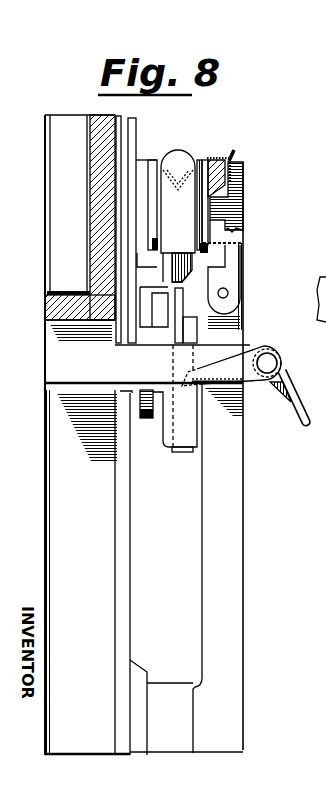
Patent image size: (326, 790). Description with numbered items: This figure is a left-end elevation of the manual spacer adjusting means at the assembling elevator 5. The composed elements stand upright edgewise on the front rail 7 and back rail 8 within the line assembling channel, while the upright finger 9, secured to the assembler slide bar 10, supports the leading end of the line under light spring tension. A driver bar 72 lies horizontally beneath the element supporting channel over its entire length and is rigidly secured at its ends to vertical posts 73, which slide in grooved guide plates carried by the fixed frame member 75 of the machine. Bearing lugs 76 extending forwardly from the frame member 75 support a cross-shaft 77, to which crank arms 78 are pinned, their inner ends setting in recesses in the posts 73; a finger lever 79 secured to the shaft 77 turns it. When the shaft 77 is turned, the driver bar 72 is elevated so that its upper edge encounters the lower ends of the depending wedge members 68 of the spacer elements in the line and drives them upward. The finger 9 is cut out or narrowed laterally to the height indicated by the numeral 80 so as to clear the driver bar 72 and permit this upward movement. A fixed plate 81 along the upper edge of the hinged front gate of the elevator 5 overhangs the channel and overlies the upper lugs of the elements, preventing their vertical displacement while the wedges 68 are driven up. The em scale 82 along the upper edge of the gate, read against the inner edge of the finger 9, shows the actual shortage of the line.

The assembling elevator 5 is at (243, 453).
The front rail 7 is at (209, 254).
The back rail 8 is at (151, 262).
The upright finger 9 is at (182, 152).
The assembler slide bar 10 is at (137, 338).
The depending wedge member 68 is at (186, 270).
The driver bar 72 is at (179, 298).
The vertical post 73 is at (180, 452).
The fixed frame member 75 is at (60, 360).
The bearing lug 76 is at (263, 345).
The cross-shaft 77 is at (270, 362).
The crank arm 78 is at (253, 384).
The finger lever 79 is at (294, 415).
The cut-out of finger 80 is at (187, 253).
The fixed plate 81 is at (212, 160).
The em scale 82 is at (236, 155).